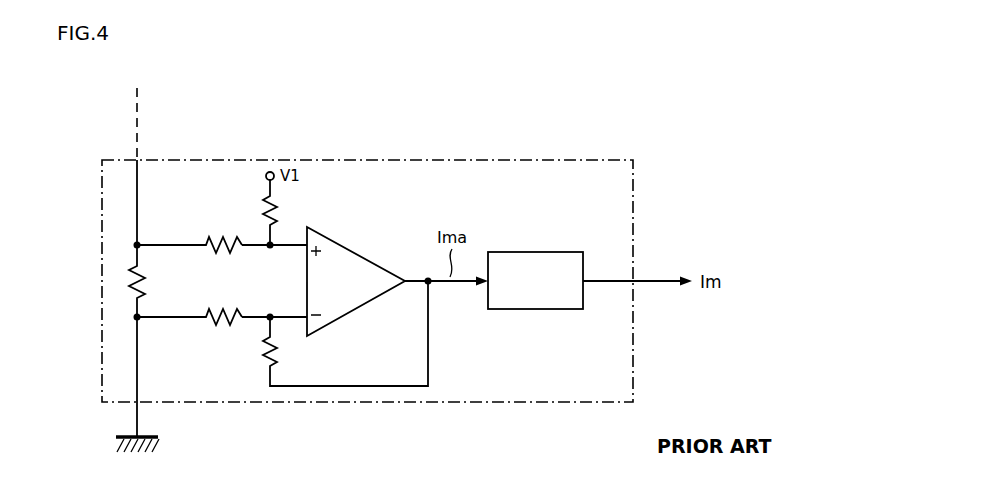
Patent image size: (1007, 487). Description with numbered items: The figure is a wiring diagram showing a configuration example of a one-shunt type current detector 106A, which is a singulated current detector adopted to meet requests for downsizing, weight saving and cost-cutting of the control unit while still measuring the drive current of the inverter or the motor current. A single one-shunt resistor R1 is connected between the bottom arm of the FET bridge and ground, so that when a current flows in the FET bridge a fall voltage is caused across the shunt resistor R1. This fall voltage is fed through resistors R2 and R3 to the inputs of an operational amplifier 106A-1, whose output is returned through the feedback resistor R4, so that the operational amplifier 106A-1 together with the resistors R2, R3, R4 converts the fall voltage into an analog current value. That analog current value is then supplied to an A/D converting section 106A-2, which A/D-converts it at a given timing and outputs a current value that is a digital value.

The one-shunt type current detector 106A is at (606, 160).
The operational amplifier 106A-1 is at (326, 236).
The A/D converting section 106A-2 is at (568, 252).
The one-shunt resistor R1 is at (150, 282).
The resistor R2 is at (222, 257).
The resistor R3 is at (222, 329).
The resistor R4 is at (285, 352).